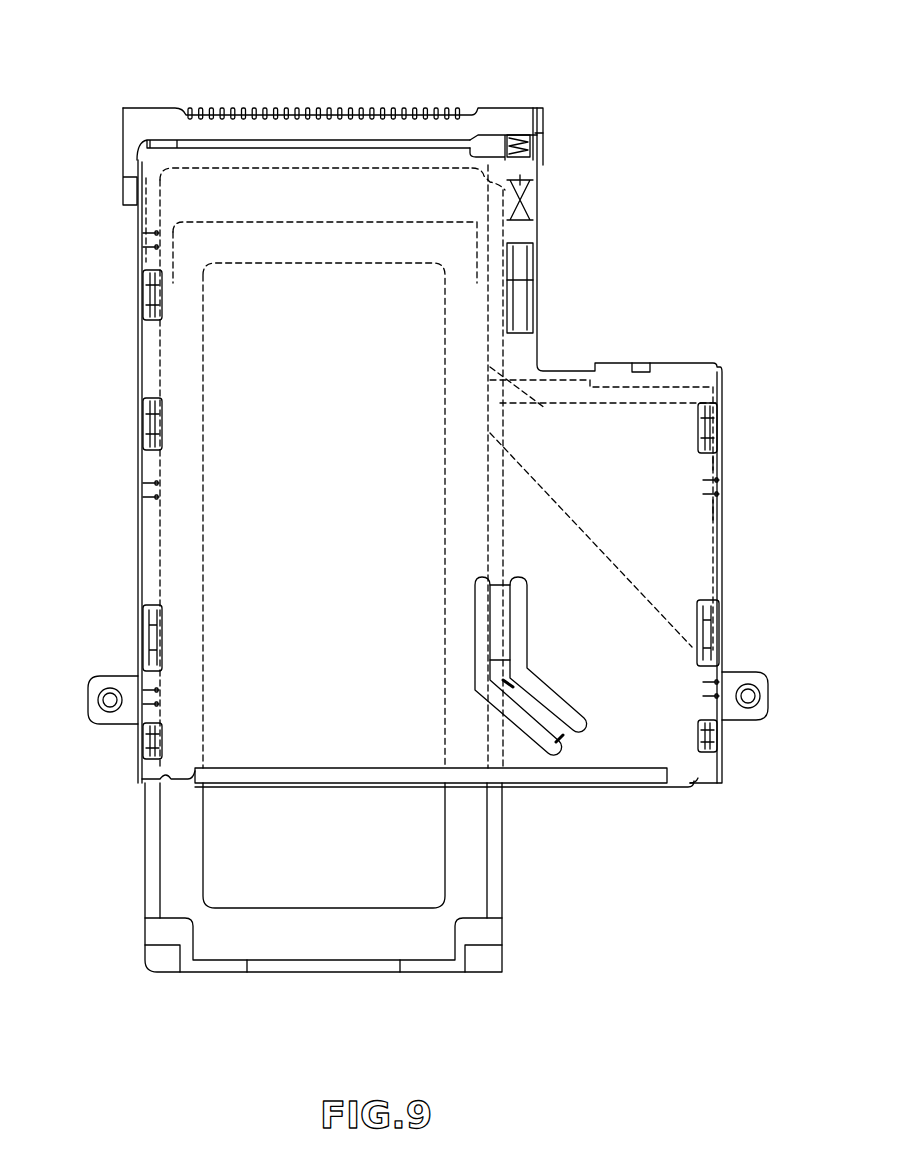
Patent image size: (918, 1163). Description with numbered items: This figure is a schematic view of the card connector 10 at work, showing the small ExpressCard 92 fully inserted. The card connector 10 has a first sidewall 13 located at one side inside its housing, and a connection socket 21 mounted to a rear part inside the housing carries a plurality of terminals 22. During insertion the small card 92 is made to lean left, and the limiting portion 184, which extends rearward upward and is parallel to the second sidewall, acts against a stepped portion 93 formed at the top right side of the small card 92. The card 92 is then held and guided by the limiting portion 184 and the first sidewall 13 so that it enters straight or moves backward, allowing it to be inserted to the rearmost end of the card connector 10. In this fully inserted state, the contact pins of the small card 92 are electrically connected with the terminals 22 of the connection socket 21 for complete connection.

The card connector 10 is at (688, 809).
The first sidewall 13 is at (138, 600).
The connection socket 21 is at (490, 110).
The terminals 22 is at (340, 110).
The limiting portion 184 is at (509, 626).
The small ExpressCard 92 is at (140, 858).
The stepped portion 93 is at (488, 878).